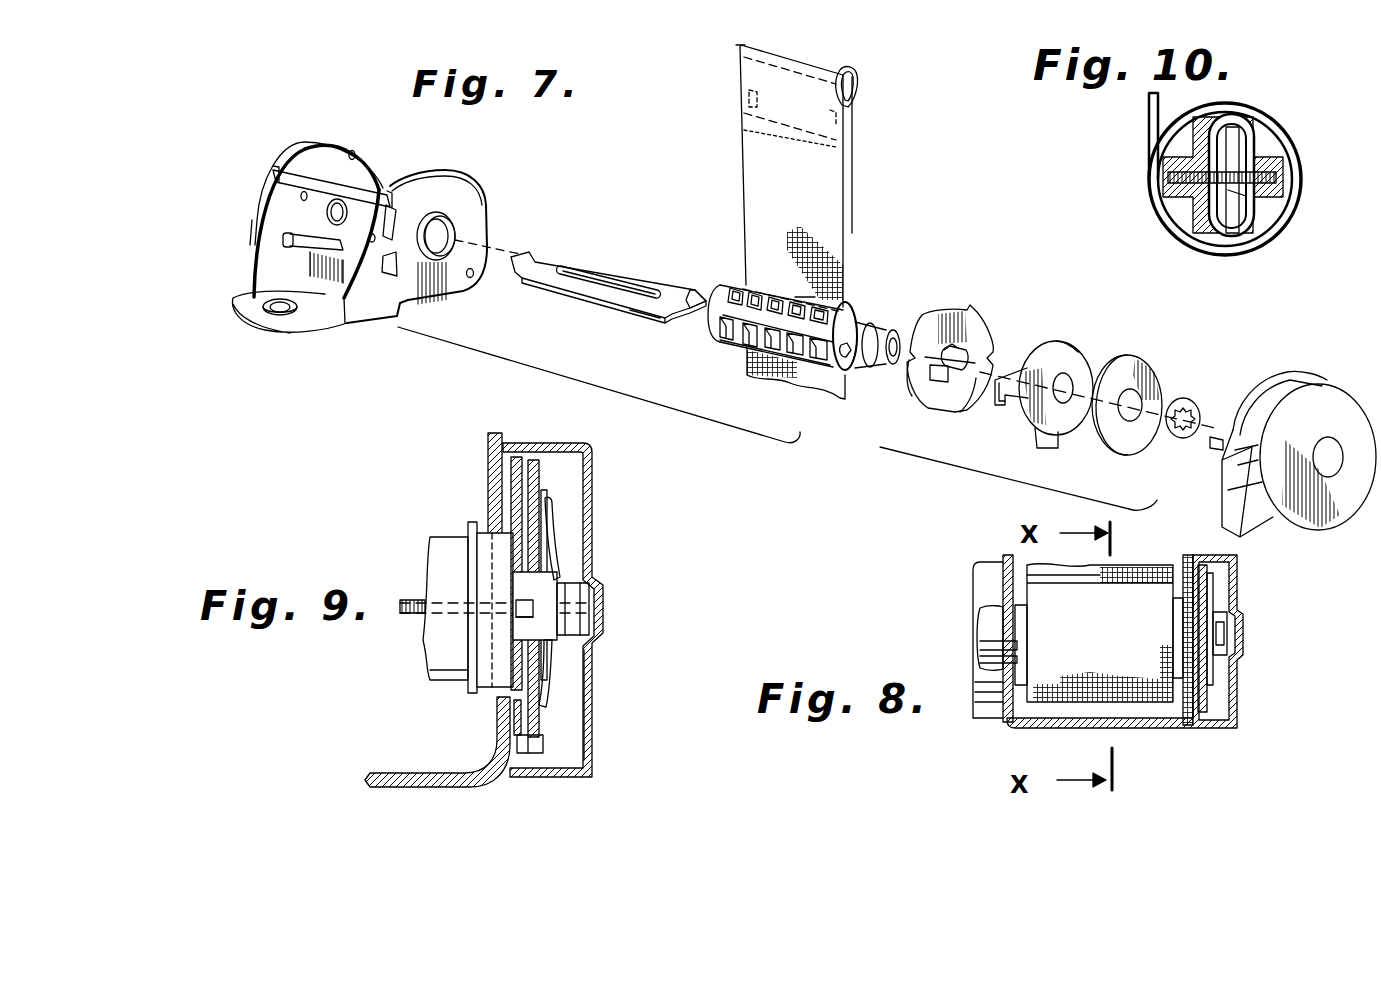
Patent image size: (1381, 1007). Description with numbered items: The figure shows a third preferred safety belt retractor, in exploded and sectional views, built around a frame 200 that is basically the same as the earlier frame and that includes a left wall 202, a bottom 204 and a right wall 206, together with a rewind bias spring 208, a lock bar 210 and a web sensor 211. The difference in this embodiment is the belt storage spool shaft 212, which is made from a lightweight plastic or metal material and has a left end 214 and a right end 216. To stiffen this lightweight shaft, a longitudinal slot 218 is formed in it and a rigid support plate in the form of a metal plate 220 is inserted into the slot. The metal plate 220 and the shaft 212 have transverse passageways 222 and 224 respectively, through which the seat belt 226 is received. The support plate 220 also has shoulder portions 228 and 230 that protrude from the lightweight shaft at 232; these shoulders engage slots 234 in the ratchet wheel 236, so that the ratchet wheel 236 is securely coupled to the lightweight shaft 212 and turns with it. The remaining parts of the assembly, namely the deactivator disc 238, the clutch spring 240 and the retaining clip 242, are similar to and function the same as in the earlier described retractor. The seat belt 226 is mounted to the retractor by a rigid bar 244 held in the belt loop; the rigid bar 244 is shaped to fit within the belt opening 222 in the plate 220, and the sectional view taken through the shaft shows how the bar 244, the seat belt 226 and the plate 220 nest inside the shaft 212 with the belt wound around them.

In FIG. 7, the frame 200 is at (407, 160).
In FIG. 7, the left wall 202 is at (343, 160).
In FIG. 7, the bottom 204 is at (323, 307).
In FIG. 9, the bottom 204 is at (407, 775).
In FIG. 7, the right wall 206 is at (521, 188).
In FIG. 9, the right wall 206 is at (492, 452).
In FIG. 7, the rewind bias spring 208 is at (291, 150).
In FIG. 8, the rewind bias spring 208 is at (983, 677).
In FIG. 7, the lock bar 210 is at (307, 237).
In FIG. 7, the web sensor 211 is at (290, 300).
In FIG. 7, the belt storage spool shaft 212 is at (860, 313).
In FIG. 10, the belt storage spool shaft 212 is at (1183, 198).
In FIG. 9, the belt storage spool shaft 212 is at (443, 633).
In FIG. 8, the belt storage spool shaft 212 is at (1200, 627).
In FIG. 7, the left end 214 is at (733, 277).
In FIG. 7, the right end 216 is at (740, 47).
In FIG. 7, the longitudinal slot 218 is at (710, 317).
In FIG. 7, the metal plate 220 is at (567, 257).
In FIG. 10, the metal plate 220 is at (1166, 177).
In FIG. 9, the metal plate 220 is at (410, 600).
In FIG. 7, the transverse passageway 222 is at (600, 277).
In FIG. 10, the transverse passageway 222 is at (1237, 193).
In FIG. 7, the transverse passageway 224 is at (800, 297).
In FIG. 10, the transverse passageway 224 is at (1220, 122).
In FIG. 7, the seat belt 226 is at (767, 158).
In FIG. 10, the seat belt 226 is at (1148, 118).
In FIG. 8, the seat belt 226 is at (1043, 577).
In FIG. 7, the shoulder portion 228 is at (637, 310).
In FIG. 9, the shoulder portion 228 is at (520, 617).
In FIG. 7, the shoulder portion 230 is at (693, 283).
In FIG. 7, the protrusion location 232 is at (847, 350).
In FIG. 9, the protrusion location 232 is at (530, 608).
In FIG. 7, the slots 234 is at (930, 377).
In FIG. 7, the ratchet wheel 236 is at (977, 327).
In FIG. 9, the ratchet wheel 236 is at (510, 497).
In FIG. 8, the ratchet wheel 236 is at (1207, 733).
In FIG. 7, the deactivator disc 238 is at (1037, 427).
In FIG. 9, the deactivator disc 238 is at (533, 490).
In FIG. 8, the deactivator disc 238 is at (1220, 693).
In FIG. 7, the clutch spring 240 is at (1137, 430).
In FIG. 9, the clutch spring 240 is at (588, 722).
In FIG. 8, the clutch spring 240 is at (1220, 597).
In FIG. 7, the retaining clip 242 is at (1200, 397).
In FIG. 9, the retaining clip 242 is at (593, 657).
In FIG. 8, the retaining clip 242 is at (1240, 640).
In FIG. 7, the rigid bar 244 is at (848, 88).
In FIG. 10, the rigid bar 244 is at (1222, 210).